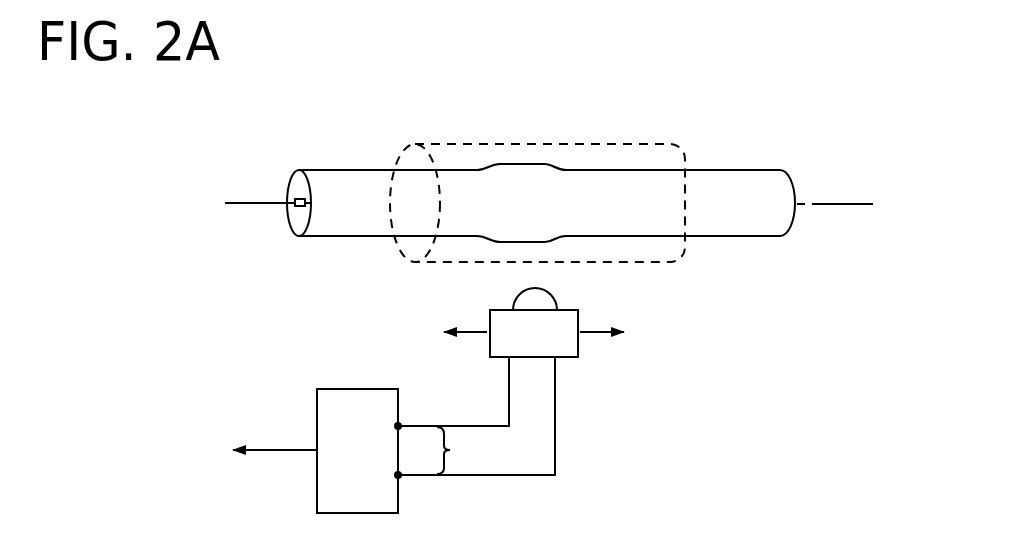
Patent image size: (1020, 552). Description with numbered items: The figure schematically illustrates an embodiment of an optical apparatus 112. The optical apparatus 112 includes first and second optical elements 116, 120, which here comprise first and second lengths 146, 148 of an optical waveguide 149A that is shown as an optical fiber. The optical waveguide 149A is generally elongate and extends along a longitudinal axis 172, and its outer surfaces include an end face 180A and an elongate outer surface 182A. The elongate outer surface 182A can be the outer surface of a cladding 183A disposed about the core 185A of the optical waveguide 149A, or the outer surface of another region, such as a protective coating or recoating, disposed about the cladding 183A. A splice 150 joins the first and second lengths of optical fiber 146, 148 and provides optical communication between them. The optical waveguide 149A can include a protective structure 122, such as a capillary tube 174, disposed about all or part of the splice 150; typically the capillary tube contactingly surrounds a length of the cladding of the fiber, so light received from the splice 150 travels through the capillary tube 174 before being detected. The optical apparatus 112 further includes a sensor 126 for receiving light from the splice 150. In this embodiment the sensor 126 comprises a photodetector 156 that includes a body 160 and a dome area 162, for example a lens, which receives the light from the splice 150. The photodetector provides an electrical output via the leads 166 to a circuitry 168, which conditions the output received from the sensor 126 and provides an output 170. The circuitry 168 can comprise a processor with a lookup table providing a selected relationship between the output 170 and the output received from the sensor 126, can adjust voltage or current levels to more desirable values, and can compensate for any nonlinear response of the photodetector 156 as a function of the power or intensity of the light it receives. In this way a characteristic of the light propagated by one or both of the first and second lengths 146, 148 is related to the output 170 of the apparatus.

The optical apparatus 112 is at (646, 71).
The first optical element 116 is at (318, 166).
The second optical element 120 is at (740, 168).
The protective structure 122 is at (541, 142).
The sensor 126 is at (583, 348).
The first length of optical fiber 146 is at (340, 239).
The second length of optical fiber 148 is at (731, 239).
The optical waveguide 149A is at (347, 125).
The splice 150 is at (510, 165).
The photodetector 156 is at (490, 342).
The actuator housing 160 is at (565, 357).
The dome area 162 is at (545, 300).
The leads 166 is at (475, 417).
The circuitry 168 is at (375, 460).
The output 170 is at (262, 452).
The longitudinal axis 172 is at (244, 205).
The capillary tube 174 is at (677, 154).
The end face 180A is at (290, 233).
The elongate outer surface 182A is at (560, 215).
The cladding 183A is at (292, 180).
The core 185A is at (295, 201).